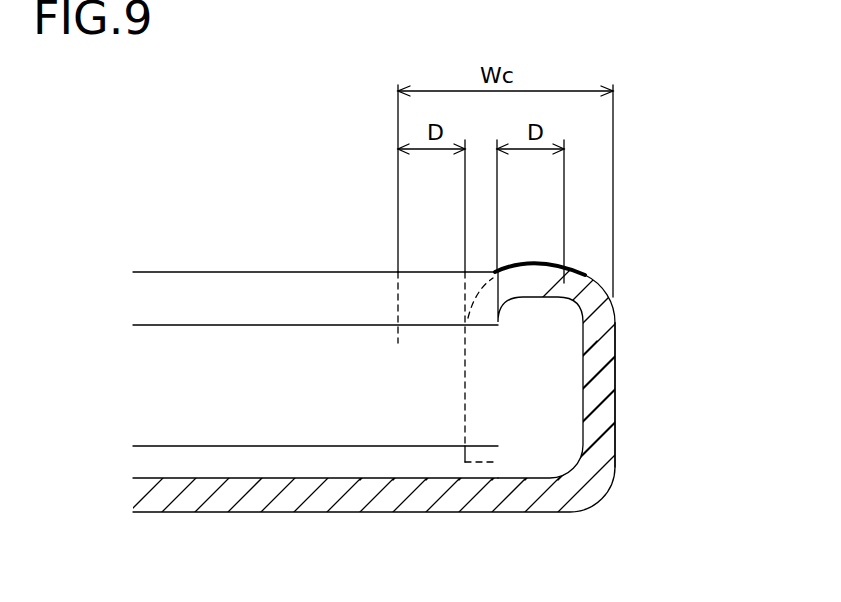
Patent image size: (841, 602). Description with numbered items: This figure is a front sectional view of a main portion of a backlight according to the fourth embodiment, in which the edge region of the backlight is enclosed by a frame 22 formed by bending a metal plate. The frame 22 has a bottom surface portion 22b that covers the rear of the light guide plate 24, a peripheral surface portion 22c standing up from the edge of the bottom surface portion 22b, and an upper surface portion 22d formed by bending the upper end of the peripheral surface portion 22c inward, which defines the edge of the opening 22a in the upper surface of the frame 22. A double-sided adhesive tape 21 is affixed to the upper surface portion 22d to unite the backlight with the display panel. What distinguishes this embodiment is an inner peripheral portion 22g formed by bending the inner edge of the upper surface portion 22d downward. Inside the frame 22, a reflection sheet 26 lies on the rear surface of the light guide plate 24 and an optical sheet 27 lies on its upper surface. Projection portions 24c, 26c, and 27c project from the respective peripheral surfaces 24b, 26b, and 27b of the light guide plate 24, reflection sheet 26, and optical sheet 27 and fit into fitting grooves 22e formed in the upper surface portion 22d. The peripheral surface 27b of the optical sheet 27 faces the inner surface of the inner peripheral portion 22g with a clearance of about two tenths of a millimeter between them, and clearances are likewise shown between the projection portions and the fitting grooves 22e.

The double-sided adhesive tape 21 is at (540, 256).
The frame 22 is at (162, 515).
The opening 22a is at (322, 262).
The bottom surface portion 22b is at (218, 515).
The peripheral surface portion 22c is at (617, 368).
The upper surface portion 22d is at (547, 298).
The fitting groove 22e is at (575, 263).
The inner peripheral portion 22g is at (465, 408).
The light guide plate 24 is at (158, 335).
The peripheral surface 24b is at (396, 376).
The projection portion 24c is at (463, 430).
The reflection sheet 26 is at (282, 468).
The peripheral surface 26b is at (402, 458).
The projection portion 26c is at (422, 460).
The optical sheet 27 is at (198, 286).
The peripheral surface 27b is at (397, 302).
The projection portion 27c is at (427, 288).